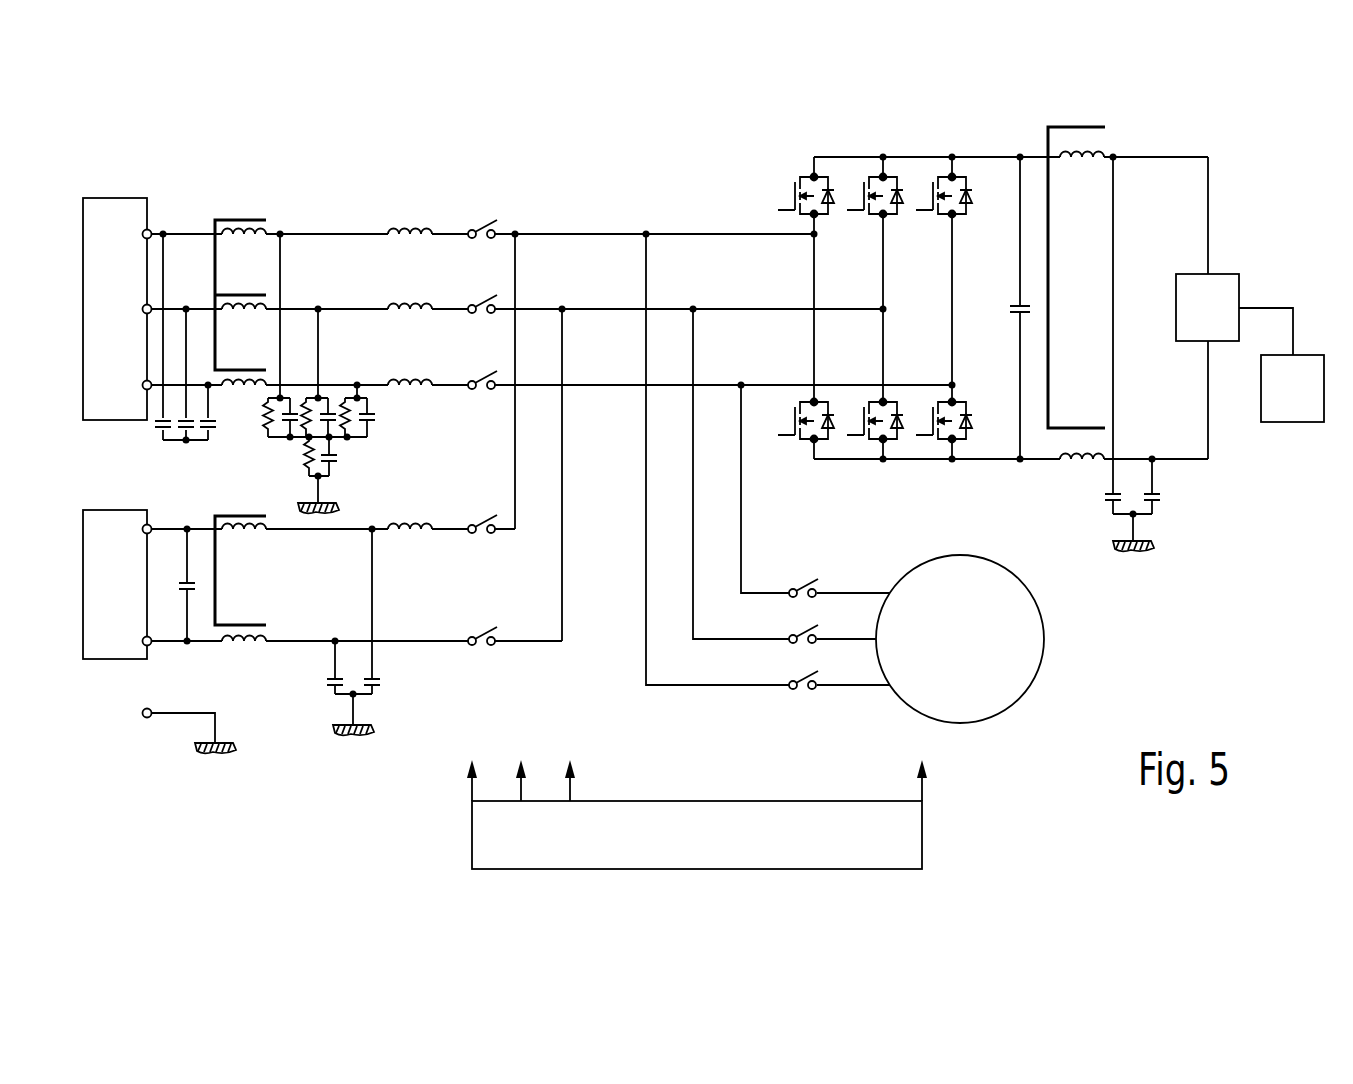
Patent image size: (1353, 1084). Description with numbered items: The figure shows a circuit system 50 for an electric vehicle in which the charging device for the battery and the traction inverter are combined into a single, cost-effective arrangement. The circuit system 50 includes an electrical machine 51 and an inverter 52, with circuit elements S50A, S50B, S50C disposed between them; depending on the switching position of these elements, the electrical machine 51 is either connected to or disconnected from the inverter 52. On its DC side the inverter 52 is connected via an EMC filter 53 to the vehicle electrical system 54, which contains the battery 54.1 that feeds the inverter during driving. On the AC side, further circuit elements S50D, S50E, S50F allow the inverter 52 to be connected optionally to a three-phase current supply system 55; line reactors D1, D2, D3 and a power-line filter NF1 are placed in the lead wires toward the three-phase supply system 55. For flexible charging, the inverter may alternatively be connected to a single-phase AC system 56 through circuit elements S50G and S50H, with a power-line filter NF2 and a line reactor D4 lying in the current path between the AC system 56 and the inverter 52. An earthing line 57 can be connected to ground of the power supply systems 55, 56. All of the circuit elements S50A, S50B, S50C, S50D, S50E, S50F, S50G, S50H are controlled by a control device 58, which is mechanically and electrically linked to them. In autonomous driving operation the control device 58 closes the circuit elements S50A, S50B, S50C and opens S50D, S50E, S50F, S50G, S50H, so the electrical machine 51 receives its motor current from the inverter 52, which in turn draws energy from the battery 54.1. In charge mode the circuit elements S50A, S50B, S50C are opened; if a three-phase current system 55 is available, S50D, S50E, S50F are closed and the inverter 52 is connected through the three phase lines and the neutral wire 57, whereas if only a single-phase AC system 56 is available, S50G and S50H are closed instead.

The circuit system 50 is at (1140, 683).
The electrical machine 51 is at (958, 568).
The inverter 52 is at (797, 161).
The EMC filter 53 is at (1096, 318).
The vehicle electrical system 54 is at (1222, 273).
The battery 54.1 is at (1292, 422).
The three-phase current supply system 55 is at (113, 197).
The single-phase AC system 56 is at (118, 660).
The earthing line 57 is at (167, 718).
The control device 58 is at (912, 846).
The power-line filter NF1 is at (235, 216).
The power-line filter NF2 is at (237, 514).
The line reactor D1 is at (410, 229).
The line reactor D2 is at (410, 304).
The line reactor D3 is at (410, 380).
The line reactor D4 is at (410, 524).
The circuit element S50A is at (796, 589).
The circuit element S50B is at (798, 632).
The circuit element S50C is at (798, 678).
The circuit element S50D is at (478, 229).
The circuit element S50E is at (478, 304).
The circuit element S50F is at (478, 380).
The circuit element S50G is at (478, 524).
The circuit element S50H is at (478, 636).